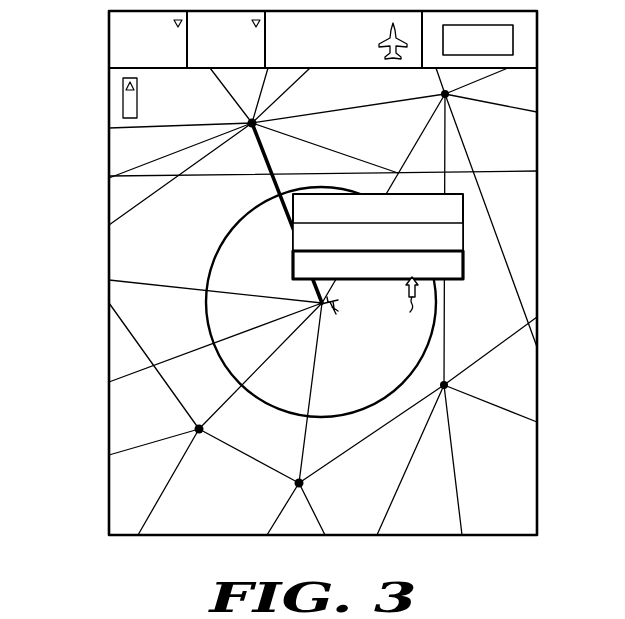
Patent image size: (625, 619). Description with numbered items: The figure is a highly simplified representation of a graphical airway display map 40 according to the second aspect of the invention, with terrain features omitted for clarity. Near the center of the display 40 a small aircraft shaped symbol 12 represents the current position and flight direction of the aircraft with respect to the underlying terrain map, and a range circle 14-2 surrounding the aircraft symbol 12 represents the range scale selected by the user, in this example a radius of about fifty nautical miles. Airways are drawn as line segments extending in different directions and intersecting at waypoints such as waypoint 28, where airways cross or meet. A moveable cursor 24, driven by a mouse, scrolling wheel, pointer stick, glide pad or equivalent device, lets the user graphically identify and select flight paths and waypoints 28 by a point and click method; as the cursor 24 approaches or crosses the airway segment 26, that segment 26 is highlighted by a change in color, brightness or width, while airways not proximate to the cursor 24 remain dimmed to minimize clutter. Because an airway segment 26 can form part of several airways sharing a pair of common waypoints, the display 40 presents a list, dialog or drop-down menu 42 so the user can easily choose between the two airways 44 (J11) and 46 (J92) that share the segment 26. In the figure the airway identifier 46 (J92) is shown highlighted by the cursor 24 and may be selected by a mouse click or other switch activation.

The aircraft shaped symbol 12 is at (335, 314).
The range circle 14-2 is at (215, 254).
The moveable cursor 24 is at (410, 304).
The airway segment 26 is at (272, 181).
The waypoint 28 is at (248, 122).
The graphical airway display map 40 is at (44, 522).
The drop-down menu 42 is at (463, 208).
The airway 44 is at (463, 237).
The airway 46 is at (463, 264).